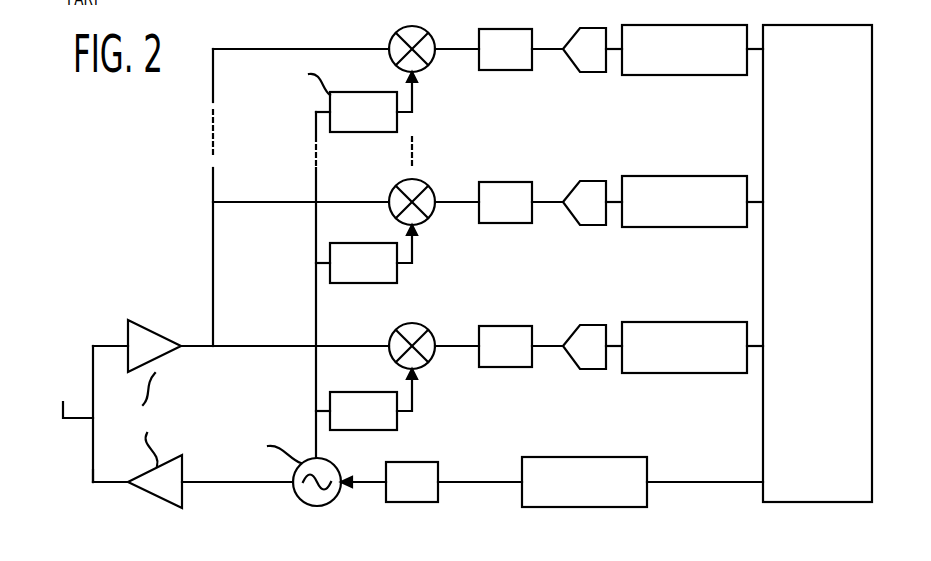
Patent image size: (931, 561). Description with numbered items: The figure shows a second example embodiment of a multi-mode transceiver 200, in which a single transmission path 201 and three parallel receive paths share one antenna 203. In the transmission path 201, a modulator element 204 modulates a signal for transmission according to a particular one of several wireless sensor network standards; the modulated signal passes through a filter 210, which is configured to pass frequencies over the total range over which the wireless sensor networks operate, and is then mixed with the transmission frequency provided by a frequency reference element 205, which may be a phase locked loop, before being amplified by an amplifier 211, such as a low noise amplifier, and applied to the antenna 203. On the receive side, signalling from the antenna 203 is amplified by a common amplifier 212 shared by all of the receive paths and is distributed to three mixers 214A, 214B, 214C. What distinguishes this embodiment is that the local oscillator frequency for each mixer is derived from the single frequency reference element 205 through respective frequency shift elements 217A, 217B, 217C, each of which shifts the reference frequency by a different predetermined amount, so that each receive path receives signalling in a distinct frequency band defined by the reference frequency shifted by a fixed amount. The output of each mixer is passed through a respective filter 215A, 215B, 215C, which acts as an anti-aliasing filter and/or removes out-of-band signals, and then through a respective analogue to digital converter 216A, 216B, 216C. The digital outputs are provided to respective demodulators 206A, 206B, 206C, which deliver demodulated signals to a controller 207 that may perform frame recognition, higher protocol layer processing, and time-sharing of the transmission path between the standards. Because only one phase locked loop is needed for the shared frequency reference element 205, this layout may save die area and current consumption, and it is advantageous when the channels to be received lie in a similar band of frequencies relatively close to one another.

The multi-mode transceiver 200 is at (120, 172).
The transmission path 201 is at (83, 503).
The antenna 203 is at (63, 401).
The modulator element 204 is at (588, 508).
The frequency reference element 205 is at (292, 497).
The demodulator 206A is at (693, 374).
The demodulator 206B is at (693, 228).
The demodulator 206C is at (700, 76).
The controller 207 is at (812, 503).
The filter 210 is at (416, 503).
The amplifier 211 is at (145, 491).
The common amplifier 212 is at (155, 333).
The mixer 214A is at (452, 319).
The mixer 214B is at (458, 176).
The mixer 214C is at (392, 42).
The filter 215A is at (517, 368).
The filter 215B is at (517, 224).
The filter 215C is at (526, 71).
The analogue to digital converter 216A is at (592, 370).
The analogue to digital converter 216B is at (592, 226).
The analogue to digital converter 216C is at (596, 73).
The frequency shift element 217A is at (366, 431).
The frequency shift element 217B is at (370, 285).
The frequency shift element 217C is at (370, 134).